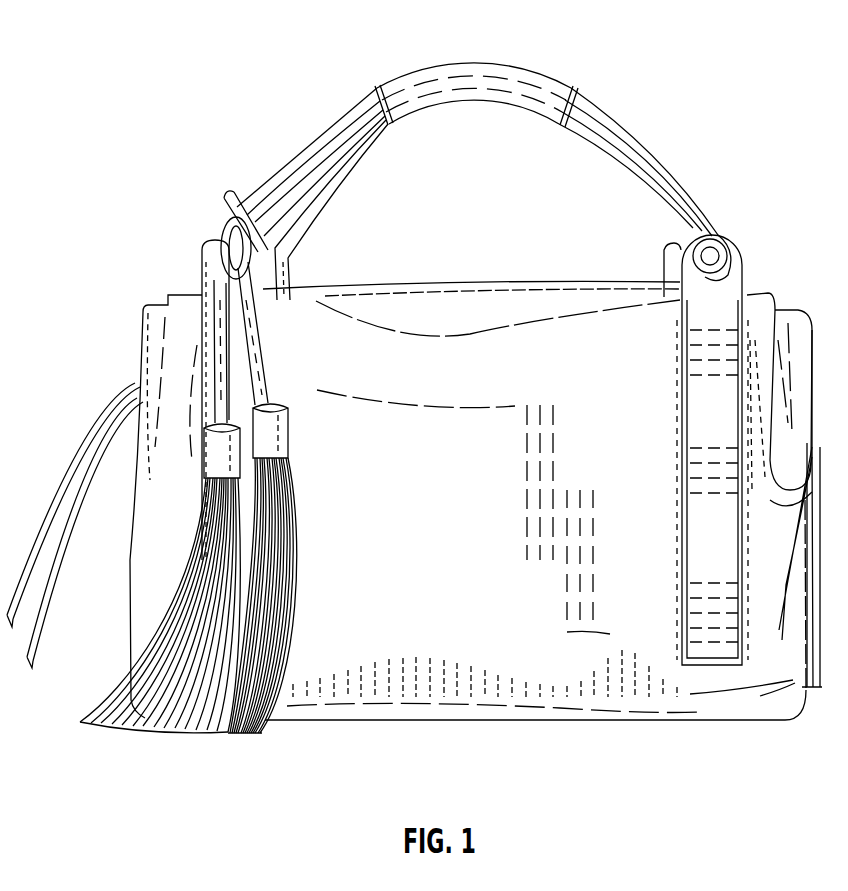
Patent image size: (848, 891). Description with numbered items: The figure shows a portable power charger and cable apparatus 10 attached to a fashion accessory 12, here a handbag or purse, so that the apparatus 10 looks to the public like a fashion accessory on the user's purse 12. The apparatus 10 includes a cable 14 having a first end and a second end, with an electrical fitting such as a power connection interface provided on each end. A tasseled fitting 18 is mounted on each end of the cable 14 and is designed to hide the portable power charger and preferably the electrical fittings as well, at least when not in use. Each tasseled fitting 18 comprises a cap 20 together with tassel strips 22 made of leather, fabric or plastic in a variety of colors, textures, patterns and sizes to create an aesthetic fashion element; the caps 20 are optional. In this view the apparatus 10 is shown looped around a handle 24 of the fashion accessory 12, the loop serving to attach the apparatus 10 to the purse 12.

The power charger and cable apparatus 10 is at (197, 262).
The fashion accessory 12 is at (763, 294).
The cable 14 is at (271, 320).
The tasseled fitting 18 is at (197, 468).
The cap 20 is at (204, 428).
The tassel strips 22 is at (290, 535).
The handle 24 is at (543, 82).